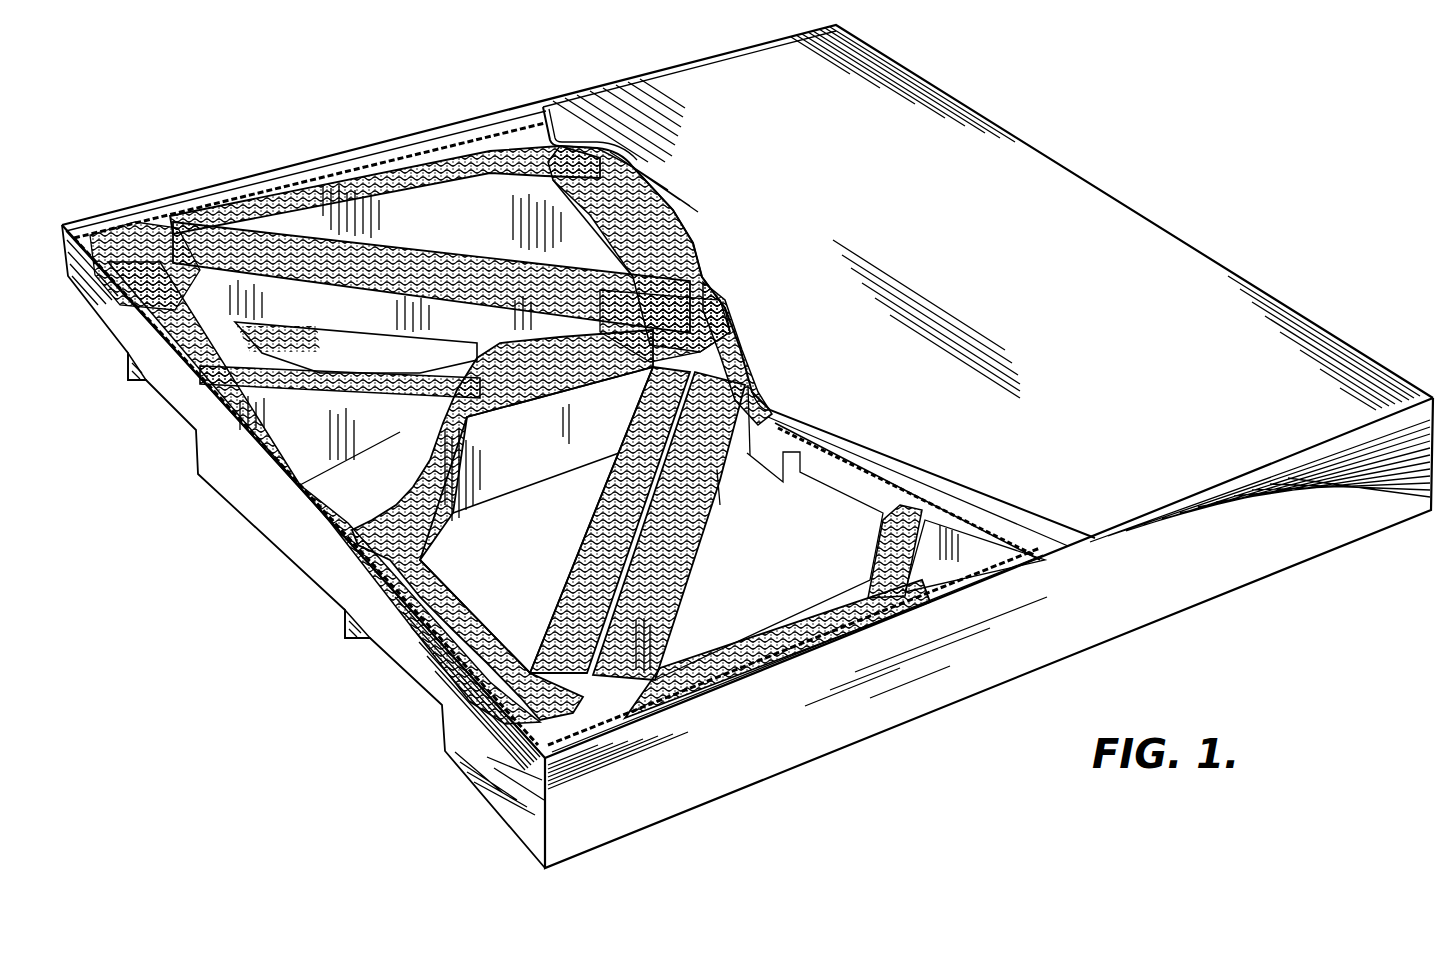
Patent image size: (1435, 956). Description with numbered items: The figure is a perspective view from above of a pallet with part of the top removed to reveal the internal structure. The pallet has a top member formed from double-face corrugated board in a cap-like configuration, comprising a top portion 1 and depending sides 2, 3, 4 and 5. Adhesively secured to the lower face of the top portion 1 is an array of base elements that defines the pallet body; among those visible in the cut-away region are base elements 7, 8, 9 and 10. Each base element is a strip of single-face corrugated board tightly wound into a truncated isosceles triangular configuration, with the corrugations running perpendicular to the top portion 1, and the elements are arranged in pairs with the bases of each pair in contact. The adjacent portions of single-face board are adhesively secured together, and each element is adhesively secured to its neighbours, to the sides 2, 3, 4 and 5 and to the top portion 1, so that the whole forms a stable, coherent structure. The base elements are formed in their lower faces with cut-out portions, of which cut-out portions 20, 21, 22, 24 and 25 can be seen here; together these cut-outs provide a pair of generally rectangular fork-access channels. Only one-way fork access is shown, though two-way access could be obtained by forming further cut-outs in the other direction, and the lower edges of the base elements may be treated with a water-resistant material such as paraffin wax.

The top portion 1 is at (1000, 138).
The depending side 2 is at (1275, 545).
The depending side 3 is at (292, 543).
The depending side 4 is at (415, 135).
The depending side 5 is at (1262, 276).
The base element 7 is at (490, 190).
The base element 8 is at (360, 278).
The base element 9 is at (515, 463).
The base element 10 is at (805, 612).
The cut-out portion 20 is at (345, 398).
The cut-out portion 21 is at (152, 385).
The cut-out portion 22 is at (363, 640).
The cut-out portion 24 is at (715, 498).
The cut-out portion 25 is at (805, 480).